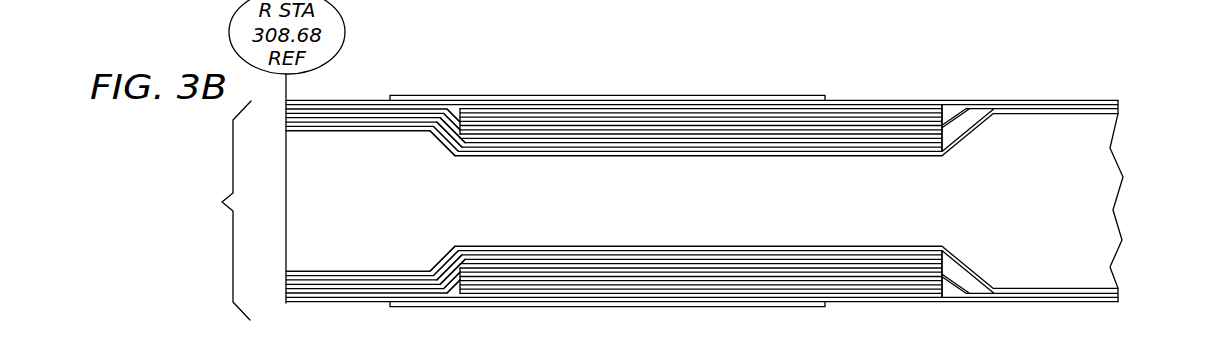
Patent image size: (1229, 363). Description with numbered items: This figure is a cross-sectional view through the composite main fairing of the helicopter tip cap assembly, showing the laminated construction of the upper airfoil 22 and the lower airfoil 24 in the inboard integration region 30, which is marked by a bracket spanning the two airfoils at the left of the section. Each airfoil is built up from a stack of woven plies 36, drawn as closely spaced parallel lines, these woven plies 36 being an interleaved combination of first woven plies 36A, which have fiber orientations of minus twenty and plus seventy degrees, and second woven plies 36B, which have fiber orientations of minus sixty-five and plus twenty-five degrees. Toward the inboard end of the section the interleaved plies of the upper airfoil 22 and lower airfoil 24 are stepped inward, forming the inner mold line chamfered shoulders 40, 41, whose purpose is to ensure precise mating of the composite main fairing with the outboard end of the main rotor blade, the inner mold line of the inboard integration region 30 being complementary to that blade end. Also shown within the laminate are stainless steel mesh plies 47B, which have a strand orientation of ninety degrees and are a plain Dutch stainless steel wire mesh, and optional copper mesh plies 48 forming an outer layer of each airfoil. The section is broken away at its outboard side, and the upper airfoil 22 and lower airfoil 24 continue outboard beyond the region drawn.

The upper airfoil 22 is at (1124, 104).
The lower airfoil 24 is at (1124, 294).
The inboard integration region 30 is at (219, 210).
The woven plies 36 is at (352, 93).
The first woven plies 36A is at (860, 132).
The second woven plies 36B is at (795, 113).
The IML chamfered shoulder 40 is at (441, 142).
The IML chamfered shoulder 41 is at (443, 260).
The stainless steel mesh plies 47B is at (492, 98).
The copper mesh plies 48 is at (923, 100).